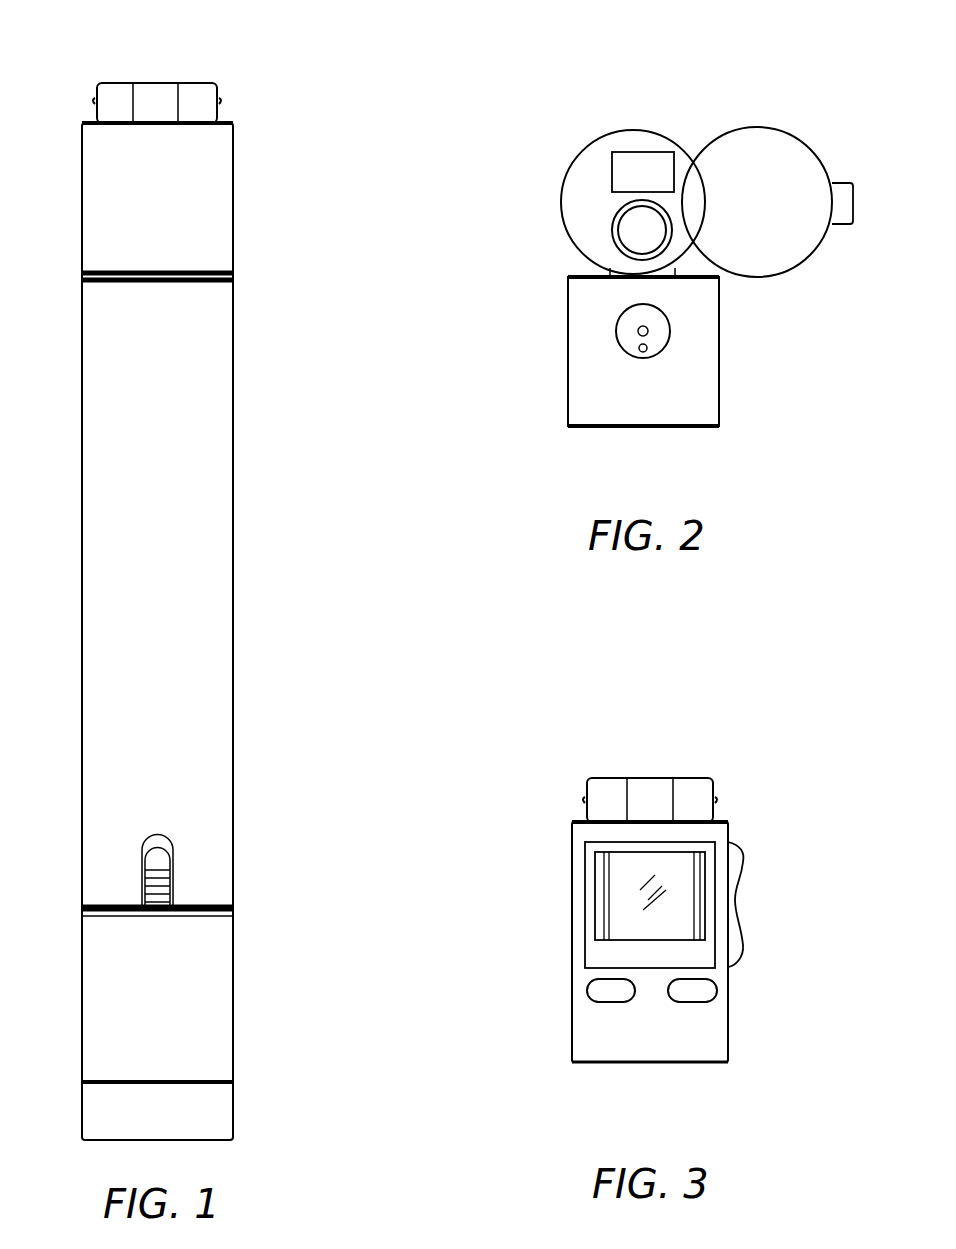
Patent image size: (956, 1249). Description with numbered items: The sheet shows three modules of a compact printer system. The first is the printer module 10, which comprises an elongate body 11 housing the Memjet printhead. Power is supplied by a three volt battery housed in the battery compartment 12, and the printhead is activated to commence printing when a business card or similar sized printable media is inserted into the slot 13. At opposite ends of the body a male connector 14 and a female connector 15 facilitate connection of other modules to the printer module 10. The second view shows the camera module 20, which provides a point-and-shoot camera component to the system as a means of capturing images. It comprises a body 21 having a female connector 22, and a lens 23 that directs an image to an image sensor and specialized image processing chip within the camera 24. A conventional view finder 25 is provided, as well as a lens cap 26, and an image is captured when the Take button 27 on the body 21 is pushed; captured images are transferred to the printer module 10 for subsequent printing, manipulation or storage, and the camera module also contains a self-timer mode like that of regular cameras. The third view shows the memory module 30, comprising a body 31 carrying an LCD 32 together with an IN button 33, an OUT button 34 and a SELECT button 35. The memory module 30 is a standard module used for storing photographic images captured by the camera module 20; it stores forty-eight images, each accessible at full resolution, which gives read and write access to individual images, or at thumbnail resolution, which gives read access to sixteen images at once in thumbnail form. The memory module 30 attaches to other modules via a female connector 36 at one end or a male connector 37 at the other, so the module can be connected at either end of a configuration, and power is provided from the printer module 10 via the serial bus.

In FIG. 1, the printer module 10 is at (262, 95).
In FIG. 1, the body 11 is at (232, 615).
In FIG. 1, the battery compartment 12 is at (232, 1002).
In FIG. 1, the slot 13 is at (91, 604).
In FIG. 1, the male connector 14 is at (103, 100).
In FIG. 1, the female connector 15 is at (232, 1117).
In FIG. 2, the camera module 20 is at (726, 95).
In FIG. 2, the body 21 is at (705, 405).
In FIG. 2, the female connector 22 is at (605, 427).
In FIG. 2, the lens 23 is at (632, 228).
In FIG. 2, the camera 24 is at (586, 180).
In FIG. 2, the view finder 25 is at (640, 162).
In FIG. 2, the lens cap 26 is at (785, 157).
In FIG. 2, the Take button 27 is at (645, 330).
In FIG. 3, the memory module 30 is at (752, 755).
In FIG. 3, the body 31 is at (733, 1042).
In FIG. 3, the LCD 32 is at (618, 890).
In FIG. 3, the IN button 33 is at (600, 990).
In FIG. 3, the OUT button 34 is at (700, 990).
In FIG. 3, the SELECT button 35 is at (745, 862).
In FIG. 3, the female connector 36 is at (595, 1063).
In FIG. 3, the male connector 37 is at (585, 790).